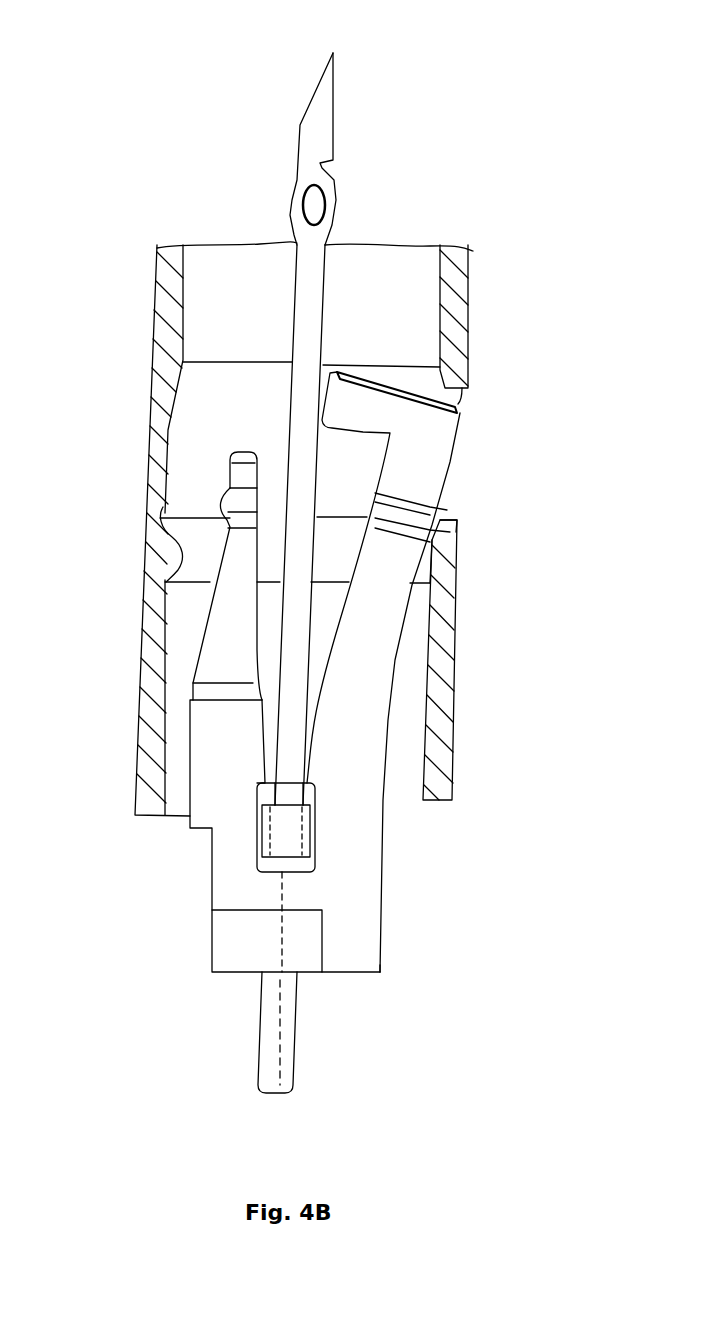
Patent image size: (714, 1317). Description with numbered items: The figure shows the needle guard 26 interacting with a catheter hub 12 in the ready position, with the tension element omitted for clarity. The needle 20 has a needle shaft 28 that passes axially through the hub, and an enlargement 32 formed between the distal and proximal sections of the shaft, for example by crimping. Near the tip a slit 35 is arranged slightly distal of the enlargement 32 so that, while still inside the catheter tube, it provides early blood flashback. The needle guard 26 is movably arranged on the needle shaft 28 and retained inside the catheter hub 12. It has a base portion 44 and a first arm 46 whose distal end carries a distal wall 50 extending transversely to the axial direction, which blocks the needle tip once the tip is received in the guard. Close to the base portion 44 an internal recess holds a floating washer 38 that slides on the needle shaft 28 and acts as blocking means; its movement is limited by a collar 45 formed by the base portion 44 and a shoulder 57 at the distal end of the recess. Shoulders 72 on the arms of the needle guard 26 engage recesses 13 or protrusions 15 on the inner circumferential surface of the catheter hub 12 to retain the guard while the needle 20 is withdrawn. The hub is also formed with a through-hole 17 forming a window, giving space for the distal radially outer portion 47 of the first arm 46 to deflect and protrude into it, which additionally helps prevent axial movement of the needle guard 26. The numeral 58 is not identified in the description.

The catheter hub 12 is at (443, 710).
The recesses 13 is at (457, 520).
The protrusions 15 is at (427, 563).
The through-hole 17 is at (460, 403).
The needle 20 is at (314, 275).
The needle guard 26 is at (383, 922).
The needle shaft 28 is at (312, 330).
The enlargement 32 is at (334, 192).
The slit 35 is at (338, 160).
The floating washer 38 is at (315, 840).
The base portion 44 is at (240, 945).
The collar 45 is at (263, 870).
The first arm 46 is at (437, 465).
The distal radially outer portion 47 is at (460, 420).
The distal wall 50 is at (390, 380).
The shoulder 57 is at (262, 783).
The body bottom corner 58 is at (348, 968).
The shoulders 72 is at (447, 500).